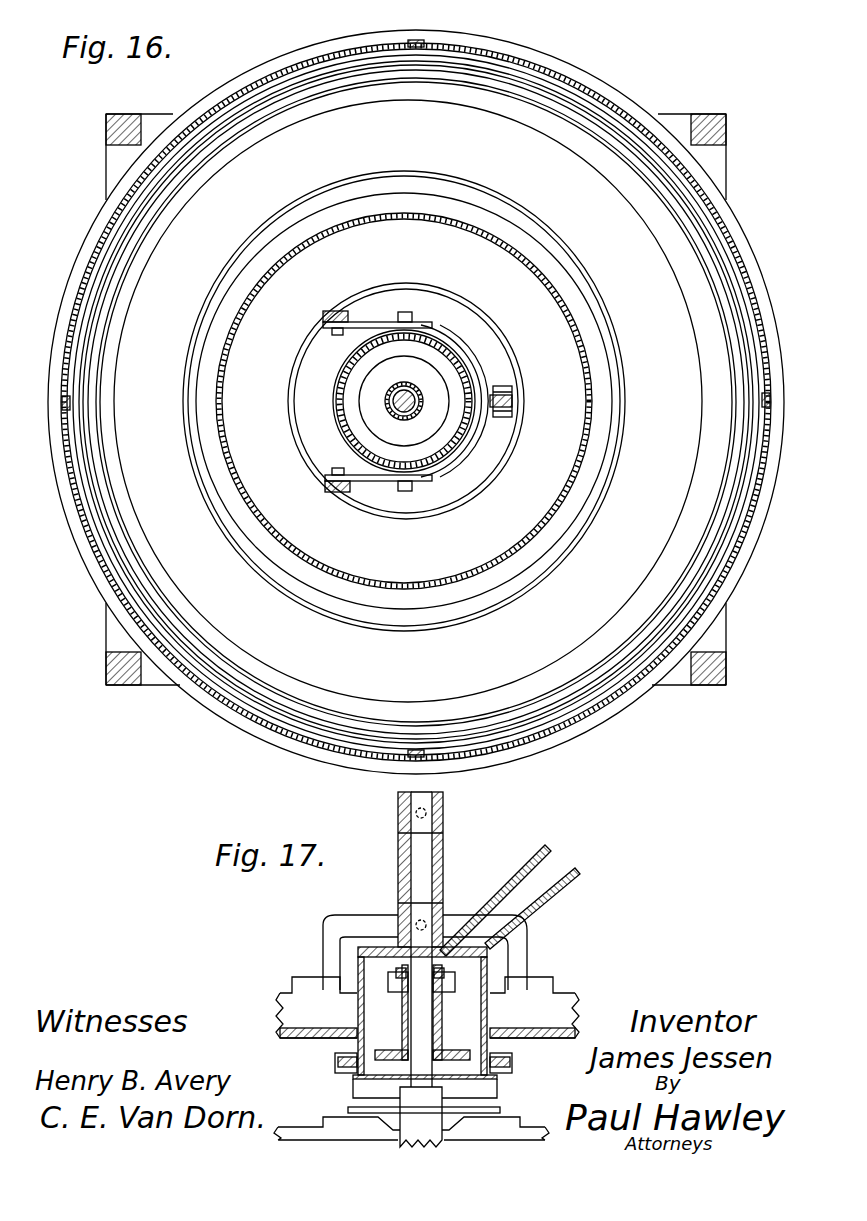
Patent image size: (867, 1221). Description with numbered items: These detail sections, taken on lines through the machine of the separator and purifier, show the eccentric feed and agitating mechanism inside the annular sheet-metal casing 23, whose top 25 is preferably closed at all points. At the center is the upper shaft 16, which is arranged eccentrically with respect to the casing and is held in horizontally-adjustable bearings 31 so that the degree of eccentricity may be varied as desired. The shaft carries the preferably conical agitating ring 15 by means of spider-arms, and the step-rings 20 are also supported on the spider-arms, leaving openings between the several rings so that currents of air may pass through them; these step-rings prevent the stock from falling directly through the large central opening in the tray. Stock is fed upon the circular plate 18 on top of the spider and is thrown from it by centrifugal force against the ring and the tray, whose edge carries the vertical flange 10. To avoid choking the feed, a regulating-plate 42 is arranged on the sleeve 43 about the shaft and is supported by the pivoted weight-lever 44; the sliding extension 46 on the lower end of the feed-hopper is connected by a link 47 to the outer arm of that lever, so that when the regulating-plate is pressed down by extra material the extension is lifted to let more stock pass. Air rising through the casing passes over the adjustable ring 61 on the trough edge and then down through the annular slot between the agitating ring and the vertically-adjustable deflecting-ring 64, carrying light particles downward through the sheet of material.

In FIG. 16, the vertical flange 10 is at (735, 452).
In FIG. 16, the agitating ring 15 is at (404, 401).
In FIG. 16, the upper shaft 16 is at (410, 392).
In FIG. 17, the upper shaft 16 is at (424, 858).
In FIG. 16, the circular plate 18 is at (450, 432).
In FIG. 17, the circular plate 18 is at (503, 1110).
In FIG. 16, the step-rings 20 is at (405, 401).
In FIG. 16, the annular sheet-metal casing 23 is at (755, 512).
In FIG. 17, the top of the casing 25 is at (566, 1038).
In FIG. 17, the horizontally-adjustable bearings 31 is at (462, 893).
In FIG. 16, the regulating-plate 42 is at (404, 401).
In FIG. 17, the regulating-plate 42 is at (423, 1041).
In FIG. 16, the sleeve 43 is at (392, 397).
In FIG. 17, the sleeve 43 is at (402, 1002).
In FIG. 17, the weight-lever 44 is at (480, 994).
In FIG. 16, the sliding extension 46 is at (340, 410).
In FIG. 17, the sliding extension 46 is at (497, 1077).
In FIG. 16, the link 47 is at (512, 400).
In FIG. 16, the adjustable ring 61 is at (756, 437).
In FIG. 16, the deflecting-ring 64 is at (222, 417).